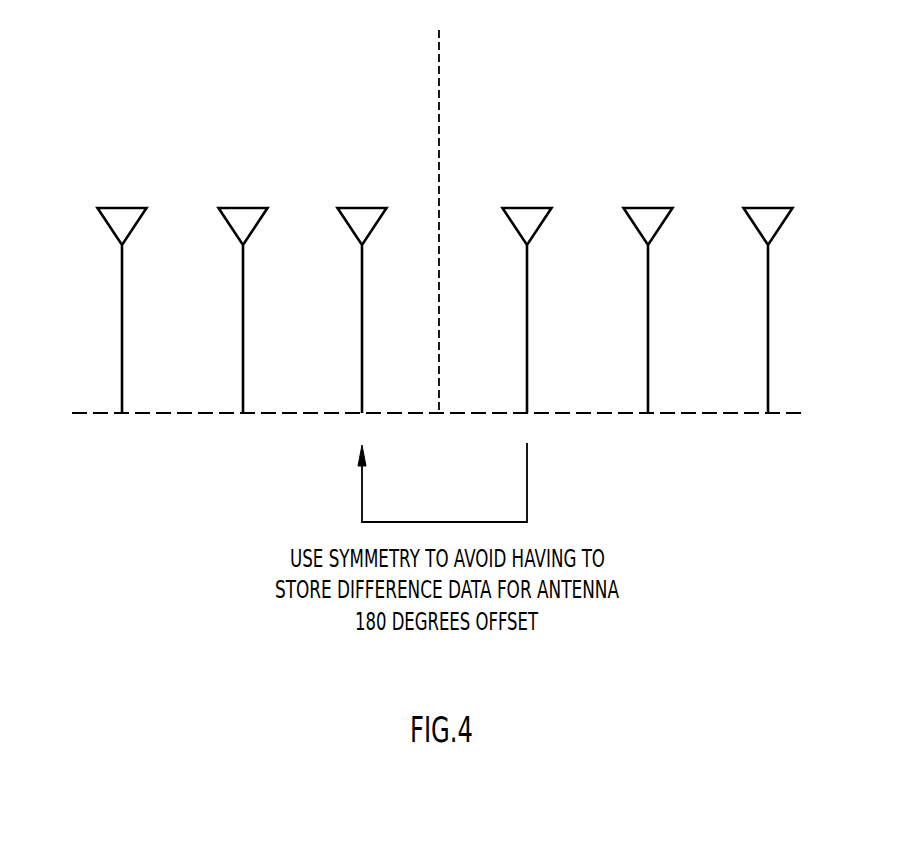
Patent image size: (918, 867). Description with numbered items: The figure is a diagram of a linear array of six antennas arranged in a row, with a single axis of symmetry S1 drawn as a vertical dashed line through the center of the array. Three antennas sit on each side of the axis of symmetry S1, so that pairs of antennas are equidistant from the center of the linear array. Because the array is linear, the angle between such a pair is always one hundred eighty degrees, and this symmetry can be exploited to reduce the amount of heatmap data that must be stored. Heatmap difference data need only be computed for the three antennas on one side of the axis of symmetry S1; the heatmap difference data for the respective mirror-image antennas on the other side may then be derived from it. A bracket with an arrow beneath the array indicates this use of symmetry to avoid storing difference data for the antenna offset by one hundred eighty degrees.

The axis of symmetry S1 is at (458, 221).